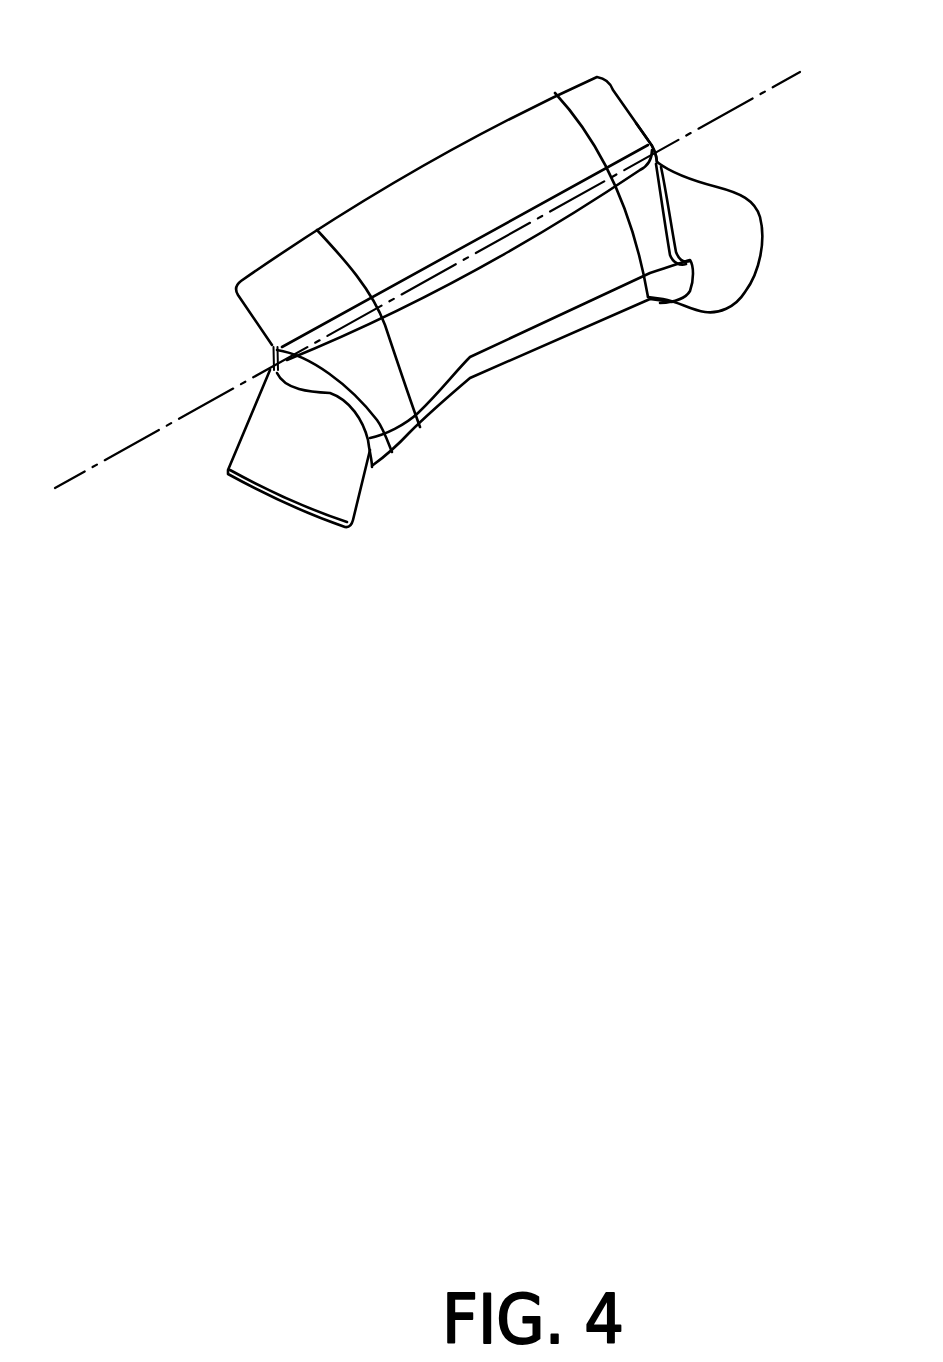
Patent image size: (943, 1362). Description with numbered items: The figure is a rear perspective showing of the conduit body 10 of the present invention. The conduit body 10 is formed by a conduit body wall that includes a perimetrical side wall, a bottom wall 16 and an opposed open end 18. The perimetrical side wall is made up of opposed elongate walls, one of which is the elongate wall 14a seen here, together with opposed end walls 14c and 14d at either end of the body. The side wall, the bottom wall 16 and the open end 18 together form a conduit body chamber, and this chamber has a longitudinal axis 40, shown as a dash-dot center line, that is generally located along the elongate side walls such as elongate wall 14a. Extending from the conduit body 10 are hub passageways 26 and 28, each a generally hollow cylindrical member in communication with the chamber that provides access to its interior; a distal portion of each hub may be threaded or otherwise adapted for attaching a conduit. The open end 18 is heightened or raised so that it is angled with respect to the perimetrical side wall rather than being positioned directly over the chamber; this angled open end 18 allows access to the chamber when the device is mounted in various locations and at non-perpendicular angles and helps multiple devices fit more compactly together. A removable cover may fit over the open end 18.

The conduit body 10 is at (150, 208).
The elongate wall 14a is at (453, 338).
The end wall 14c is at (657, 162).
The end wall 14d is at (273, 362).
The bottom wall 16 is at (546, 334).
The open end 18 is at (424, 160).
The hub passageway 26 is at (307, 483).
The hub passageway 28 is at (720, 257).
The longitudinal axis 40 is at (712, 122).